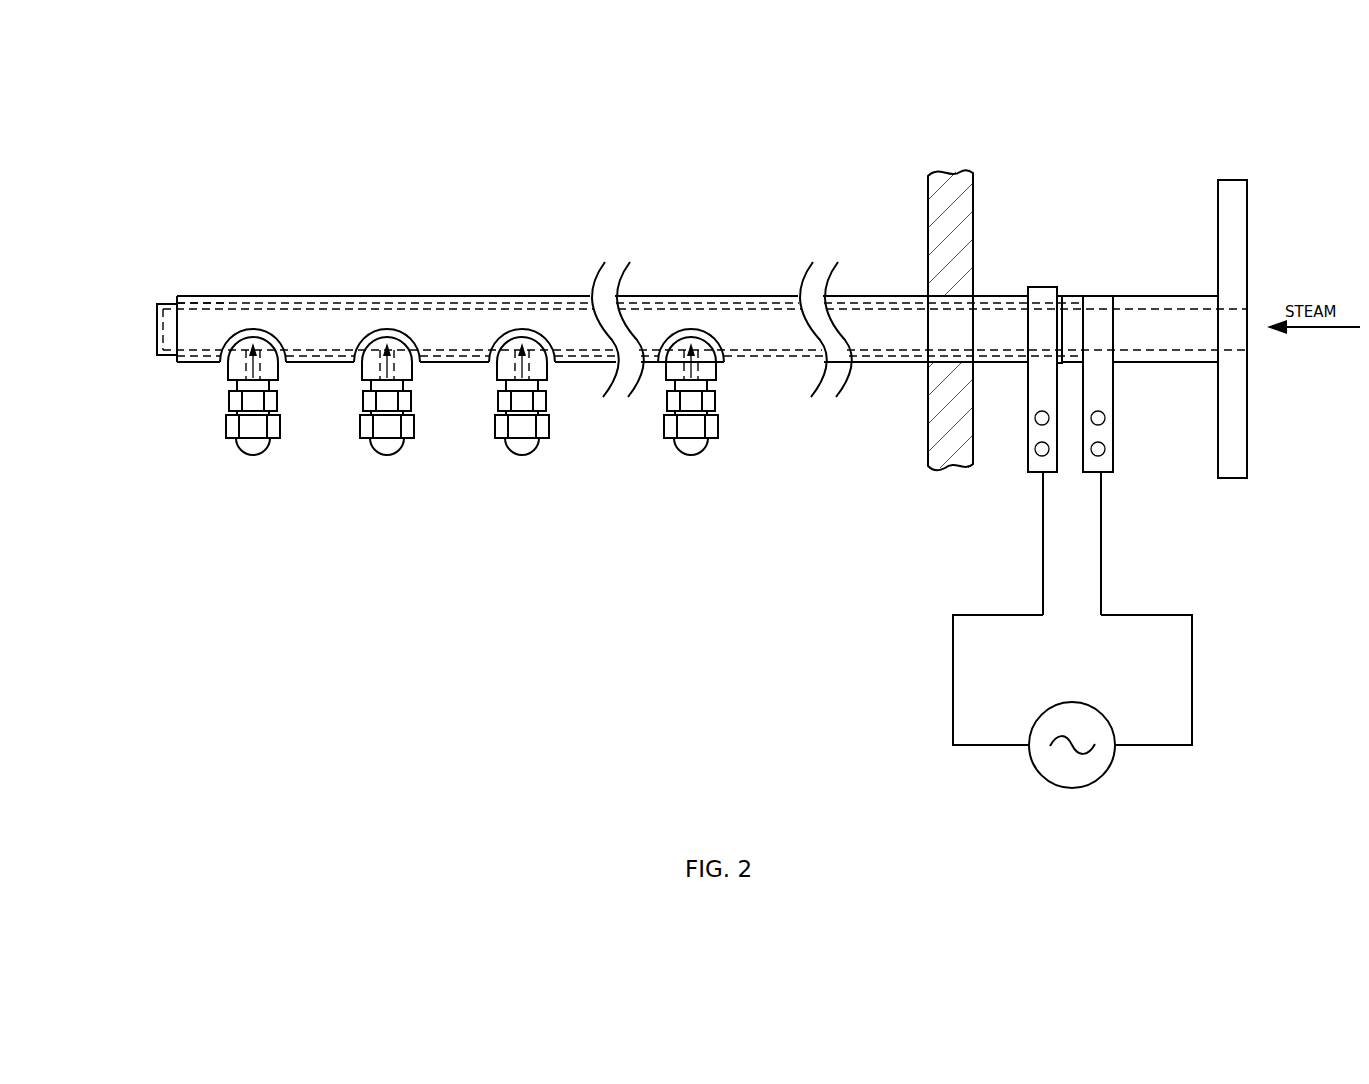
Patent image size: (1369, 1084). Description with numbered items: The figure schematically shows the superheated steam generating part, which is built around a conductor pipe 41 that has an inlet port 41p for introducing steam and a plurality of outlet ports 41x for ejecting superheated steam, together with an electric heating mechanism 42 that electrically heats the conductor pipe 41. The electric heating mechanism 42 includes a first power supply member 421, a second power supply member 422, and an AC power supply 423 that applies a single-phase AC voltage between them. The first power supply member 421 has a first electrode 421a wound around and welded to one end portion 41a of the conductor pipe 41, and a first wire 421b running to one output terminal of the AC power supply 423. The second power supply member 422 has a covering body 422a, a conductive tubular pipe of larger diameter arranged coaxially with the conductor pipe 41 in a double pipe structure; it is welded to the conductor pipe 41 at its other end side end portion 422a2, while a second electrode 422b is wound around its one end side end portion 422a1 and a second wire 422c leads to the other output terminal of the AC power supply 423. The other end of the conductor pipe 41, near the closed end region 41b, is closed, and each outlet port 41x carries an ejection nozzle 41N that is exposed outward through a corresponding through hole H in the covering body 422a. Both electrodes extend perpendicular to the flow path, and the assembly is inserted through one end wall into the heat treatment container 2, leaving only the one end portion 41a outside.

The heat treatment container 2 is at (975, 202).
The conductor pipe 41 is at (650, 278).
The one end portion of the conductor pipe 41a is at (1098, 262).
The pipe closed end 41b is at (163, 270).
The inlet port 41p is at (1248, 338).
The ejection nozzle 41N is at (255, 457).
The outlet port 41x is at (250, 370).
The through hole H is at (268, 340).
The electric heating mechanism 42 is at (870, 630).
The first power supply member 421 is at (1233, 490).
The first electrode 421a is at (1114, 428).
The first wire 421b is at (1101, 566).
The second power supply member 422 is at (935, 580).
The covering body 422a is at (777, 364).
The one end side end portion of the covering body 422a1 is at (1040, 272).
The other end side end portion of the covering body 422a2 is at (189, 285).
The second electrode 422b is at (1027, 435).
The second wire 422c is at (1042, 560).
The AC power supply 423 is at (1073, 790).